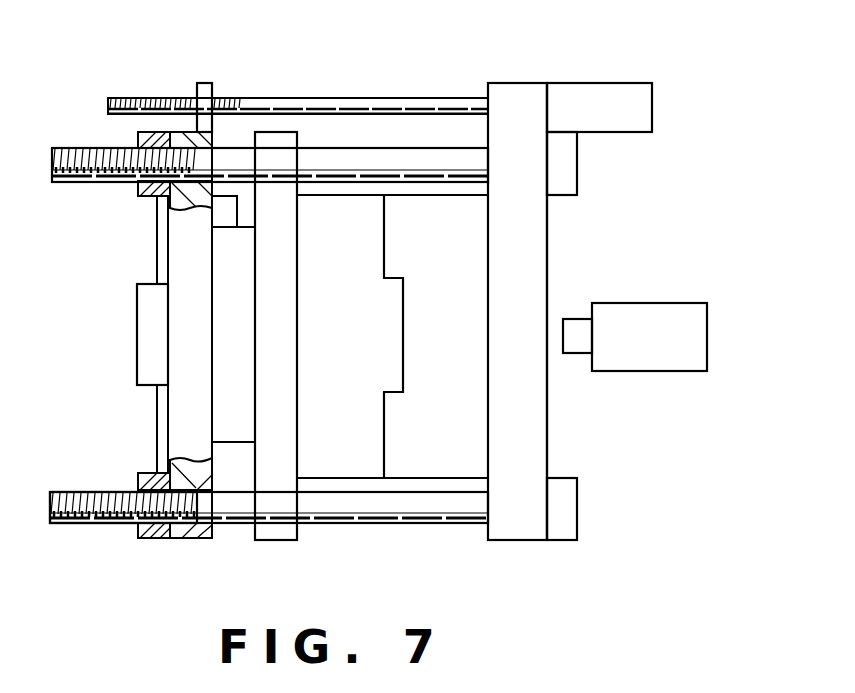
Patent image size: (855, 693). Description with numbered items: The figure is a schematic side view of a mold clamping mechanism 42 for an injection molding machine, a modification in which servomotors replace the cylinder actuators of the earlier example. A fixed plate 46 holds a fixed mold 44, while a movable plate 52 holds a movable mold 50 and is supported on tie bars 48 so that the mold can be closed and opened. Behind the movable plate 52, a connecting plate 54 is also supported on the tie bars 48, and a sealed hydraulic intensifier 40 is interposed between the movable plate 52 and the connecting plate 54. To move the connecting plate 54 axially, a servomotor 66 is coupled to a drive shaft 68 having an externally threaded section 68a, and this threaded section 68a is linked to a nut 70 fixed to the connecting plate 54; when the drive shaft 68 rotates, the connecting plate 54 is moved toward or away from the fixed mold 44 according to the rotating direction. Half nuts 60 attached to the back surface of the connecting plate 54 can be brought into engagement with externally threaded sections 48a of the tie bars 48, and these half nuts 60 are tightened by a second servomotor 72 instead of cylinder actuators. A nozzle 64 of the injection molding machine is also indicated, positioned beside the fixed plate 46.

The sealed hydraulic intensifier 40 is at (230, 252).
The mold clamping mechanism 42 is at (558, 58).
The fixed mold 44 is at (468, 250).
The fixed plate 46 is at (532, 428).
The tie bars 48 is at (418, 155).
The externally threaded sections of the tie bars 48a is at (68, 523).
The movable mold 50 is at (352, 447).
The movable plate 52 is at (278, 540).
The connecting plate 54 is at (190, 538).
The half nuts 60 is at (145, 135).
The nozzle 64 is at (656, 362).
The servomotor 66 is at (652, 108).
The drive shaft 68 is at (333, 104).
The externally threaded section of the drive shaft 68a is at (144, 97).
The nut 70 is at (207, 88).
The servomotor 72 is at (148, 335).